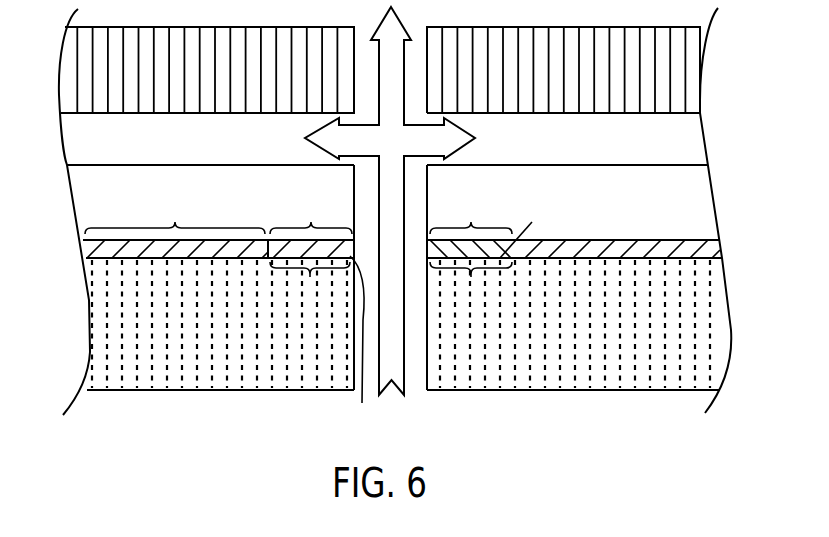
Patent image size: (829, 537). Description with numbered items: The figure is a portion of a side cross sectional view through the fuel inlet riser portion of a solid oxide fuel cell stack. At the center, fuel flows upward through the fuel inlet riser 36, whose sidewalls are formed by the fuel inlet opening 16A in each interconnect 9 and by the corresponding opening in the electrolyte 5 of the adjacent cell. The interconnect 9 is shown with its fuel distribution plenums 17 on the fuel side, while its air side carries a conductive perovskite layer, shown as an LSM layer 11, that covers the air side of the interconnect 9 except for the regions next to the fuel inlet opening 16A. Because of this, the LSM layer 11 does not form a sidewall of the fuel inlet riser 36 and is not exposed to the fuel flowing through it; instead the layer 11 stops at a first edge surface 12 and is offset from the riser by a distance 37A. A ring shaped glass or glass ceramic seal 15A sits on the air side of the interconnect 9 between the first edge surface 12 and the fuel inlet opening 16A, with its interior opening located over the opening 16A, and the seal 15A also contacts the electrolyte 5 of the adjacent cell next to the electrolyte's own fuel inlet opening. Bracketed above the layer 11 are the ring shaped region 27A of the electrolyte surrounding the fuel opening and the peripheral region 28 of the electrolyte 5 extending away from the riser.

The interconnect 9 is at (688, 72).
The fuel distribution plenum 17 is at (703, 143).
The electrolyte 5 is at (703, 200).
The conductive perovskite layer 11 is at (88, 247).
The first edge surface 12 is at (268, 249).
The peripheral region 28 is at (175, 212).
The ring shaped region 27A is at (391, 212).
The distance 37A is at (391, 286).
The ring shaped seal 15A is at (460, 318).
The fuel inlet opening 16A is at (353, 374).
The fuel inlet riser 36 is at (390, 396).